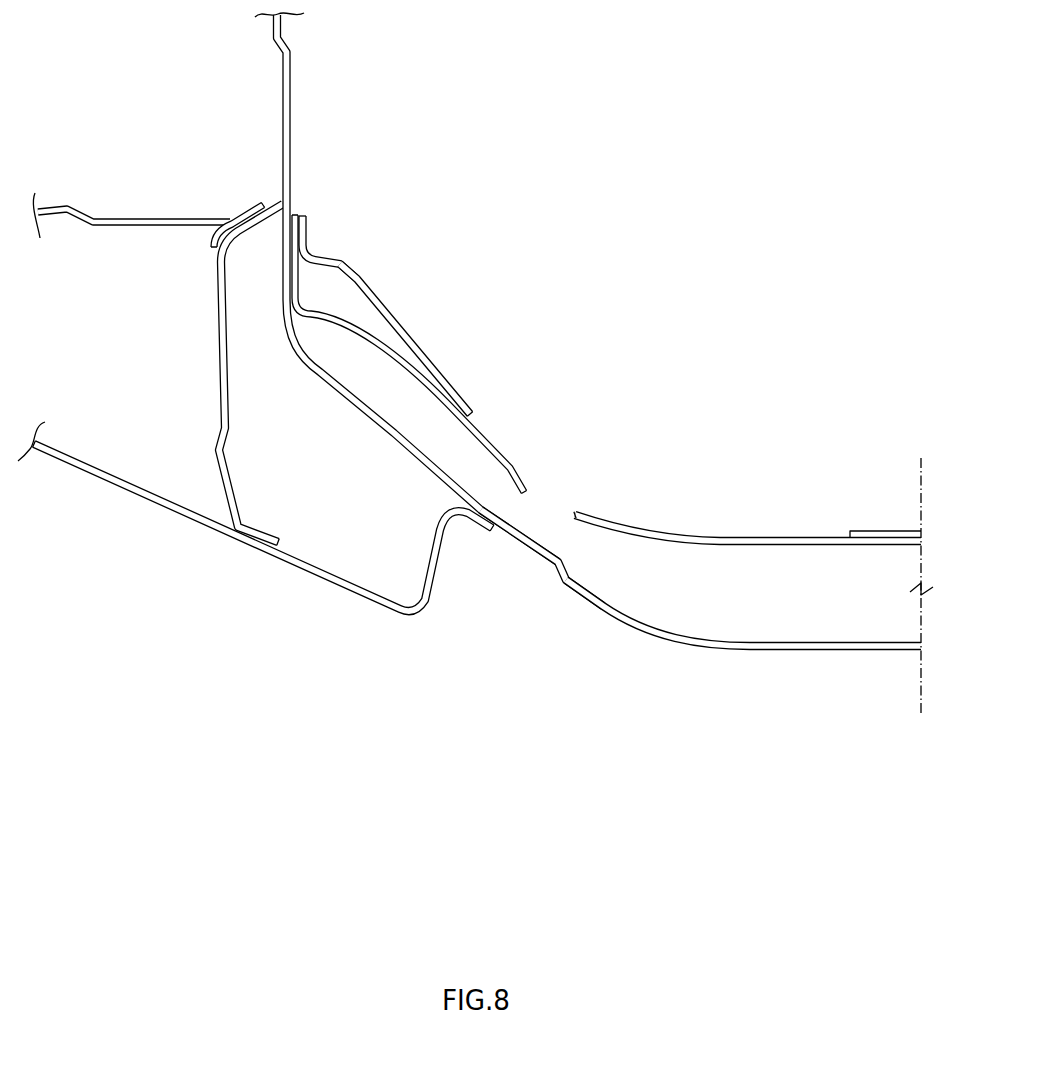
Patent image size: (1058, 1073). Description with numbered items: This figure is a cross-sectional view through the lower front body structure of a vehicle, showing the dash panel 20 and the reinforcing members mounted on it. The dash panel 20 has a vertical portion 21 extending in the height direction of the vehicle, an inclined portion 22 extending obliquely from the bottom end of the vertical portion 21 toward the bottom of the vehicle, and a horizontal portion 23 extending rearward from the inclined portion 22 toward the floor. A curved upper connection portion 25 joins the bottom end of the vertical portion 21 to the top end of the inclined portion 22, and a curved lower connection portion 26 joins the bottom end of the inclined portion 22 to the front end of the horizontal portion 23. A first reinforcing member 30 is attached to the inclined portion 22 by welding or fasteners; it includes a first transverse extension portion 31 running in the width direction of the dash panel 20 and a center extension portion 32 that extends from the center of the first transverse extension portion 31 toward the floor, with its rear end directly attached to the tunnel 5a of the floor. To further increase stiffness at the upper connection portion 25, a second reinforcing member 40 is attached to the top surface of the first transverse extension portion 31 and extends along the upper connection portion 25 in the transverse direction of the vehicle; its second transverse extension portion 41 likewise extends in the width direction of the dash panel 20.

The dash panel 20 is at (562, 364).
The vertical portion 21 is at (289, 94).
The inclined portion 22 is at (440, 480).
The horizontal portion 23 is at (805, 650).
The upper connection portion 25 is at (271, 339).
The lower connection portion 26 is at (601, 634).
The first reinforcing member 30 is at (606, 378).
The first transverse extension portion 31 is at (345, 318).
The center extension portion 32 is at (720, 537).
The second reinforcing member 40 is at (386, 295).
The second transverse extension portion 41 is at (358, 276).
The tunnel 5a is at (875, 531).